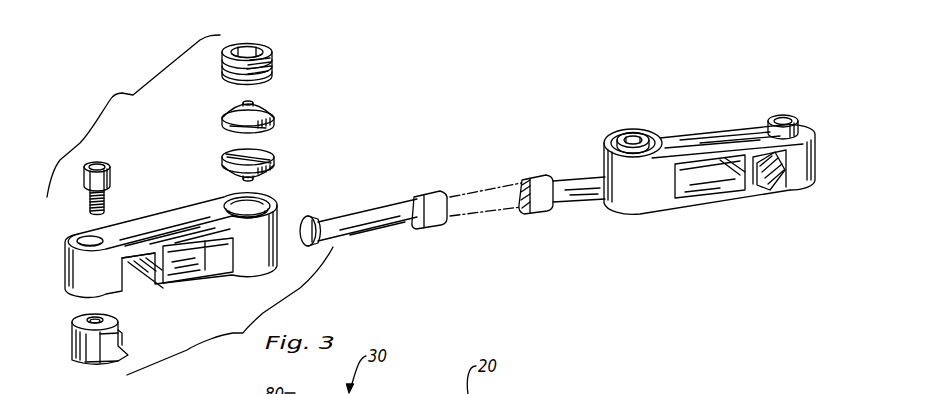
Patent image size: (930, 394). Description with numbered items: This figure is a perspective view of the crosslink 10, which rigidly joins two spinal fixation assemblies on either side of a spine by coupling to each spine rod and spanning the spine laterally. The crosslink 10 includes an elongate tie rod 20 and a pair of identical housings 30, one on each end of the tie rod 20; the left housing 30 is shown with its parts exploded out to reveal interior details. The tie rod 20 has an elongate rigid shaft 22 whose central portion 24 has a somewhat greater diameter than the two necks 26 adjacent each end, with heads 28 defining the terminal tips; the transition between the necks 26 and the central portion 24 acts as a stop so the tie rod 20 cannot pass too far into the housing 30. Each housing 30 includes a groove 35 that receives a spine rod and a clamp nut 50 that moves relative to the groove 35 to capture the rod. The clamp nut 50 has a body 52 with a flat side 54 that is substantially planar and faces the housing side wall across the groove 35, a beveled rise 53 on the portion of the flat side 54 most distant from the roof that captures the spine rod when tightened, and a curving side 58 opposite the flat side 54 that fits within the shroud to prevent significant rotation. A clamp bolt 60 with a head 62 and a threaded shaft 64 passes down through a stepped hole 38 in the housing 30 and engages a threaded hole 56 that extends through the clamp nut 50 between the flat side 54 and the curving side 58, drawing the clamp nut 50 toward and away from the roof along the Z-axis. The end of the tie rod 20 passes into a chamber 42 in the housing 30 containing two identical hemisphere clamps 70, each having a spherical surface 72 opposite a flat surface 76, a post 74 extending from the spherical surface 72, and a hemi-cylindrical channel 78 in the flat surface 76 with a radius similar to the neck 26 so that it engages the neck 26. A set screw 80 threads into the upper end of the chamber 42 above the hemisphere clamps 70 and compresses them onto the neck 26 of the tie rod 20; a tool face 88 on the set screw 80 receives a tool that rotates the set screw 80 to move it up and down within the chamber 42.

The crosslink 10 is at (587, 250).
The tie rod 20 is at (452, 192).
The shaft 22 is at (415, 228).
The central portion 24 is at (428, 196).
The neck 26 is at (385, 207).
The head 28 is at (337, 232).
The housing 30 is at (430, 192).
The groove 35 is at (140, 282).
The stepped hole 38 is at (88, 238).
The chamber 42 is at (292, 196).
The clamp nut 50 is at (418, 273).
The body 52 is at (74, 341).
The beveled rise 53 is at (132, 348).
The flat side 54 is at (120, 331).
The threaded hole 56 is at (90, 320).
The curving side 58 is at (85, 362).
The clamp bolt 60 is at (441, 146).
The head 62 is at (112, 174).
The threaded shaft 64 is at (108, 202).
The hemisphere clamp 70 is at (233, 140).
The spherical surface 72 is at (270, 107).
The post 74 is at (243, 103).
The flat surface 76 is at (226, 155).
The hemi-cylindrical channel 78 is at (228, 134).
The set screw 80 is at (448, 80).
The tool face 88 is at (255, 46).